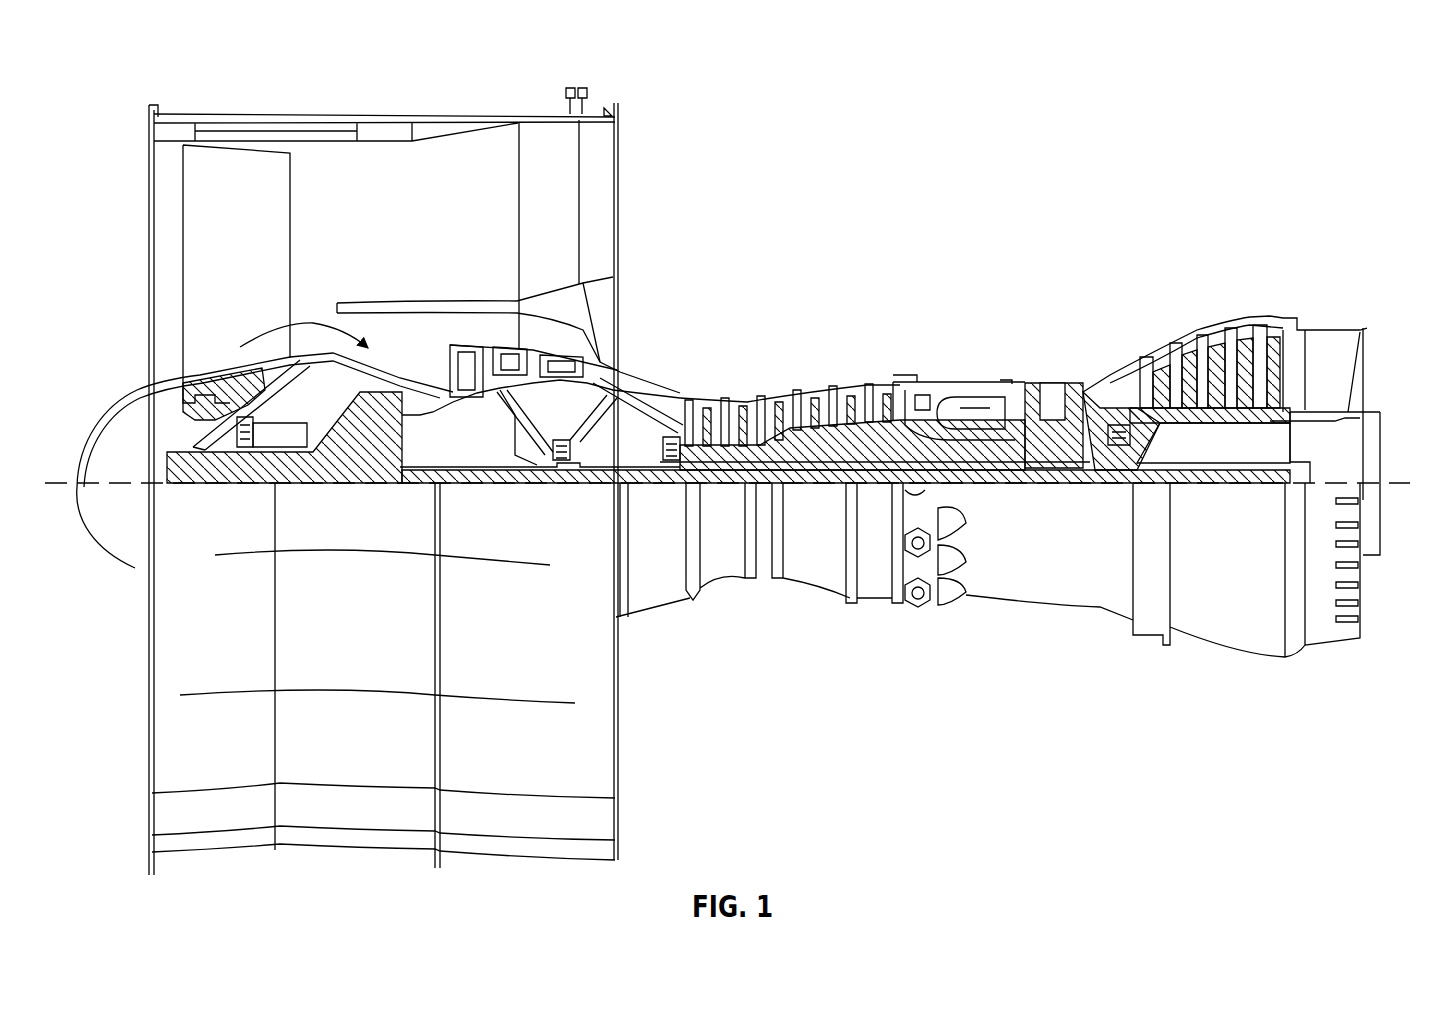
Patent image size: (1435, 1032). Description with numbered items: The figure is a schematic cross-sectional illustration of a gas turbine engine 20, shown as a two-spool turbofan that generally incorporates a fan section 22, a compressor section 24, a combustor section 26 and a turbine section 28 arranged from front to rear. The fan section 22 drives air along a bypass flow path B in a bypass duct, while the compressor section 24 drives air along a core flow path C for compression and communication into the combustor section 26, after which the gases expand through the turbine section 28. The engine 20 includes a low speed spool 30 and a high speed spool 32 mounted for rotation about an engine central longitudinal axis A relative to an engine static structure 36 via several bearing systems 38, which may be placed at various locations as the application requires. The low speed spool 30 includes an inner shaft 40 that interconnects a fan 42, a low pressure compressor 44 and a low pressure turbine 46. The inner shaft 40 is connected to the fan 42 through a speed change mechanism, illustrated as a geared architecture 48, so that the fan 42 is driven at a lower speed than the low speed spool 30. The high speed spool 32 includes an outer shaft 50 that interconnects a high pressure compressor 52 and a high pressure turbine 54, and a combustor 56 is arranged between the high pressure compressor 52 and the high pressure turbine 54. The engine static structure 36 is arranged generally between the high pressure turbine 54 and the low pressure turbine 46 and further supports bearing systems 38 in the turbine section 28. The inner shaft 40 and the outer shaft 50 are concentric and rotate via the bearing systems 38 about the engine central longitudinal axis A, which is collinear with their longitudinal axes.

The gas turbine engine 20 is at (1248, 83).
The fan section 22 is at (258, 106).
The compressor section 24 is at (800, 305).
The combustor section 26 is at (962, 320).
The turbine section 28 is at (1115, 300).
The low speed spool 30 is at (838, 487).
The high speed spool 32 is at (895, 440).
The engine static structure 36 is at (875, 602).
The bearing systems 38 is at (245, 455).
The inner shaft 40 is at (640, 487).
The fan 42 is at (246, 236).
The low pressure compressor 44 is at (530, 345).
The low pressure turbine 46 is at (1218, 335).
The geared architecture 48 is at (385, 458).
The outer shaft 50 is at (1005, 478).
The high pressure compressor 52 is at (765, 405).
The high pressure turbine 54 is at (1055, 385).
The combustor 56 is at (970, 400).
The engine central longitudinal axis A is at (1389, 480).
The bypass flow path B is at (465, 213).
The core flow path C is at (266, 338).